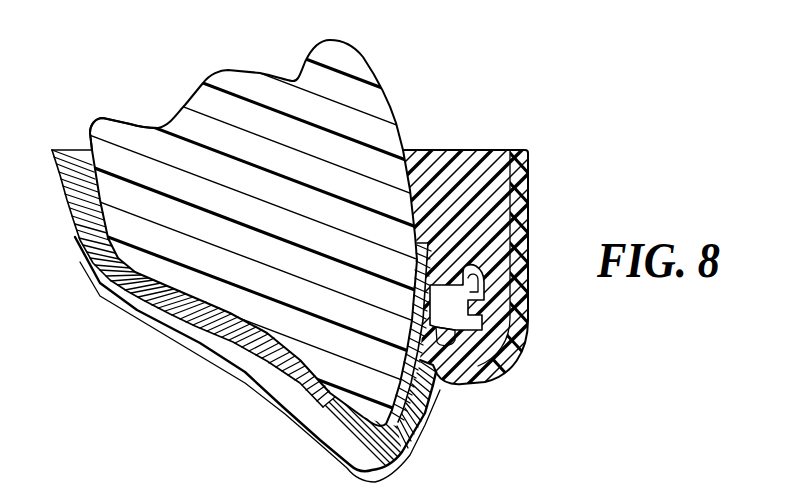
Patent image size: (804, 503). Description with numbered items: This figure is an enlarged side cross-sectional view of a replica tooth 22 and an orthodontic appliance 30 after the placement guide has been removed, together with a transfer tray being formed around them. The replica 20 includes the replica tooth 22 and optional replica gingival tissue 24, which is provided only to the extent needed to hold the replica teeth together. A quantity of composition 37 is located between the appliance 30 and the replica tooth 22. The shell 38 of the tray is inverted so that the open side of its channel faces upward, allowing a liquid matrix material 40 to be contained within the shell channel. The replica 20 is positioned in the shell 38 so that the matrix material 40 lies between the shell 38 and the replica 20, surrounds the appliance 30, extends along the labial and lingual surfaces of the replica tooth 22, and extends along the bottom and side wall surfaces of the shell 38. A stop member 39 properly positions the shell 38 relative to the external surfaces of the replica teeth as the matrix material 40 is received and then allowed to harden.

The replica 20 is at (297, 74).
The replica tooth 22 is at (330, 427).
The replica gingival tissue 24 is at (133, 130).
The orthodontic appliance 30 is at (460, 327).
The composition 37 is at (418, 245).
The shell 38 is at (227, 357).
The stop member 39 is at (370, 447).
The matrix material 40 is at (502, 183).